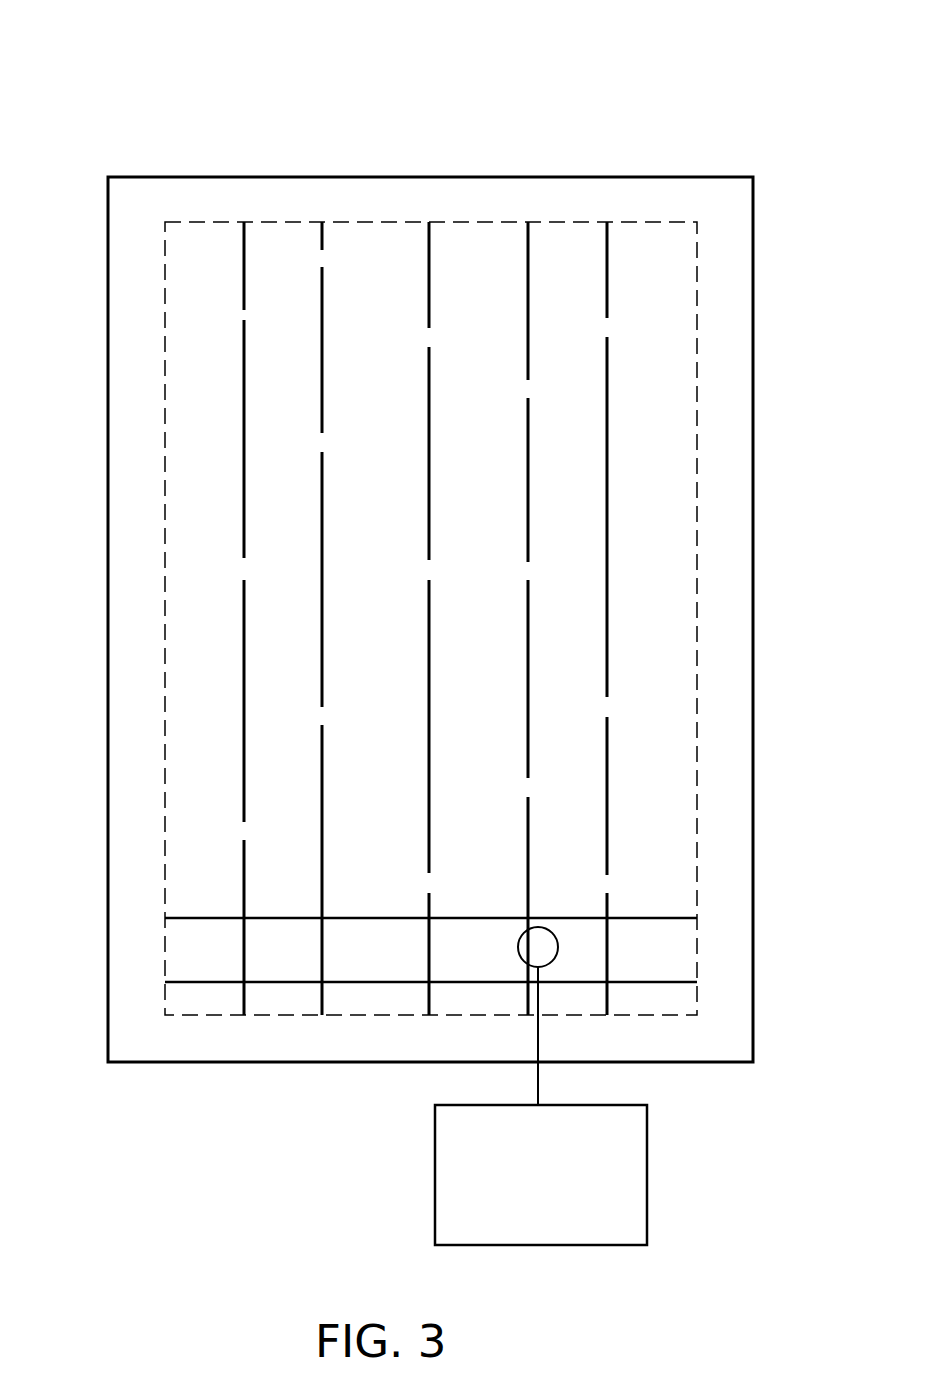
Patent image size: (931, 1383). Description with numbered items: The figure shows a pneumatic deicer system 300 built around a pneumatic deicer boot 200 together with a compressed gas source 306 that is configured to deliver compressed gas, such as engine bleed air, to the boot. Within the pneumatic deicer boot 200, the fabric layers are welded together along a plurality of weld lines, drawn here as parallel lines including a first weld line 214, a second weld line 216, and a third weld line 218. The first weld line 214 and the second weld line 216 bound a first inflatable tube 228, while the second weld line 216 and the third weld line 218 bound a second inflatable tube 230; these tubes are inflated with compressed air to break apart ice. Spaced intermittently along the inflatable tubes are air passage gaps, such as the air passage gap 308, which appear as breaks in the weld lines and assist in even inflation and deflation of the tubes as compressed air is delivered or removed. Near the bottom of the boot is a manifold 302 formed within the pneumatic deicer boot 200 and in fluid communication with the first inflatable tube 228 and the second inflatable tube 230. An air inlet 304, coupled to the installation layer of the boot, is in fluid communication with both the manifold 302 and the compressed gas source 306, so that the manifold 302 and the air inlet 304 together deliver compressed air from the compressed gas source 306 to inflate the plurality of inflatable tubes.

The pneumatic deicer system 300 is at (503, 110).
The pneumatic deicer boot 200 is at (642, 176).
The air passage gap 308 is at (244, 320).
The second inflatable tube 230 is at (437, 530).
The first inflatable tube 228 is at (537, 530).
The third weld line 218 is at (432, 640).
The second weld line 216 is at (530, 642).
The first weld line 214 is at (608, 640).
The manifold 302 is at (685, 963).
The air inlet 304 is at (558, 947).
The compressed gas source 306 is at (648, 1165).